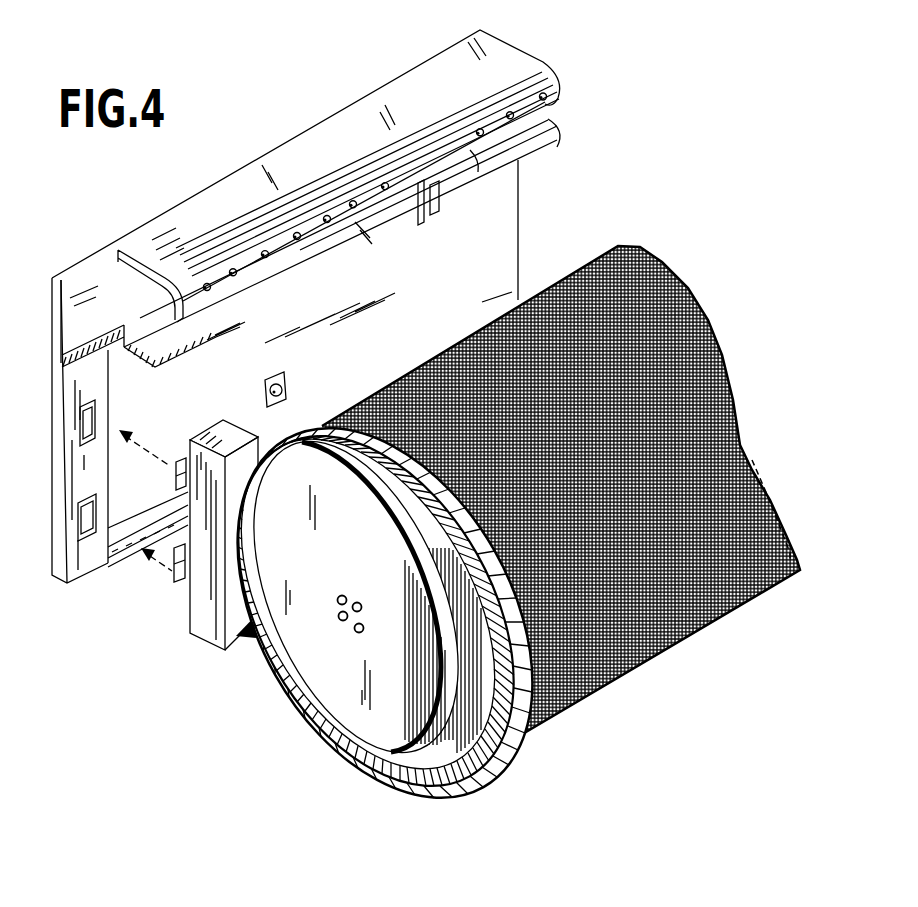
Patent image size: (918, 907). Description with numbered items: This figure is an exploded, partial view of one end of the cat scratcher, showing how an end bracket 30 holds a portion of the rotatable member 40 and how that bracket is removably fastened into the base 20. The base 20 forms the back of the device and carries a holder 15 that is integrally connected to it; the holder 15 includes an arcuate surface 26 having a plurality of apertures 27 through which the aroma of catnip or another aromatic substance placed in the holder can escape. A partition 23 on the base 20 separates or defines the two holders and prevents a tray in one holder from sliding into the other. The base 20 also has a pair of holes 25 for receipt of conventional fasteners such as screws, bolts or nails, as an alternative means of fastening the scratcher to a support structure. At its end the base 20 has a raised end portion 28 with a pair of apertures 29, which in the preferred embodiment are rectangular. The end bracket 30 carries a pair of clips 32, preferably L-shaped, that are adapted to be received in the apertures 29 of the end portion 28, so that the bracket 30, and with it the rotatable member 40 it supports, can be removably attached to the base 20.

The holder 15 is at (540, 153).
The base 20 is at (506, 236).
The partition 23 is at (436, 205).
The holes 25 is at (286, 387).
The arcuate surface 26 is at (393, 113).
The apertures 27 is at (545, 98).
The raised end portion 28 is at (83, 465).
The apertures 29 is at (98, 498).
The end bracket 30 is at (312, 664).
The clips 32 is at (181, 580).
The rotatable member 40 is at (743, 612).